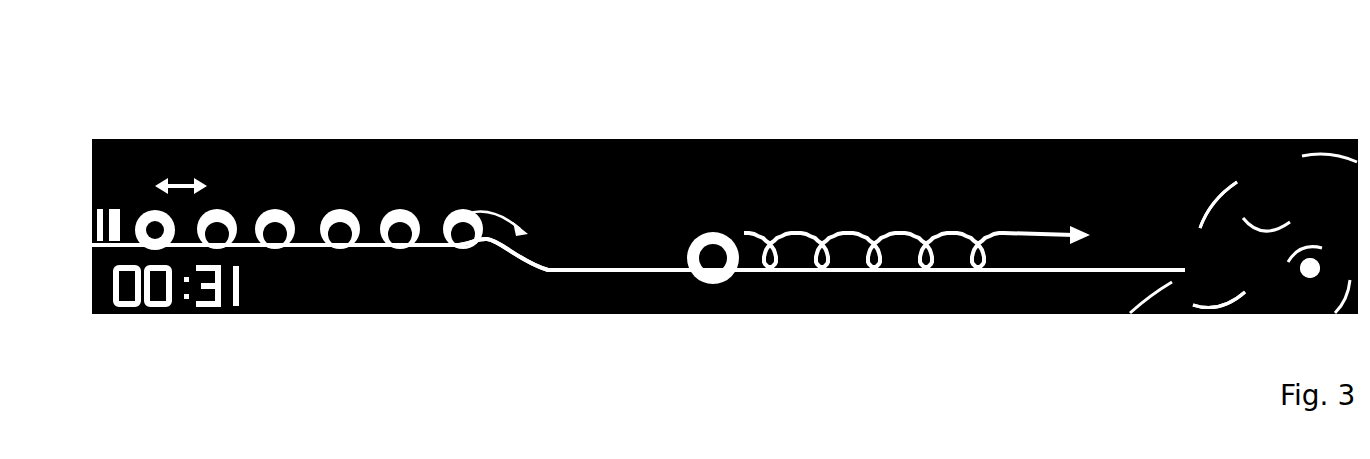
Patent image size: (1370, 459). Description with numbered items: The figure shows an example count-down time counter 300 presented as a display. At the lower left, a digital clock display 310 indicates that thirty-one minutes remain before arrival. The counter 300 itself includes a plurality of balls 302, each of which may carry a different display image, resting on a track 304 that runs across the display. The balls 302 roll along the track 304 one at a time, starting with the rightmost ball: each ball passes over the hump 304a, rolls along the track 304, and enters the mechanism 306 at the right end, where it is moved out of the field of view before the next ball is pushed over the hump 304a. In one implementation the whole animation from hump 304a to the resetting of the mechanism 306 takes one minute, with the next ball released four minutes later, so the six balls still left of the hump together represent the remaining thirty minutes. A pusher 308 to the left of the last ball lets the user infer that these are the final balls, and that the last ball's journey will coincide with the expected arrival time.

The time counter 300 is at (112, 100).
The balls 302 is at (327, 139).
The track 304 is at (631, 272).
The hump 304a is at (494, 250).
The mechanism 306 is at (1273, 313).
The pusher 308 is at (97, 235).
The digital clock display 310 is at (150, 302).